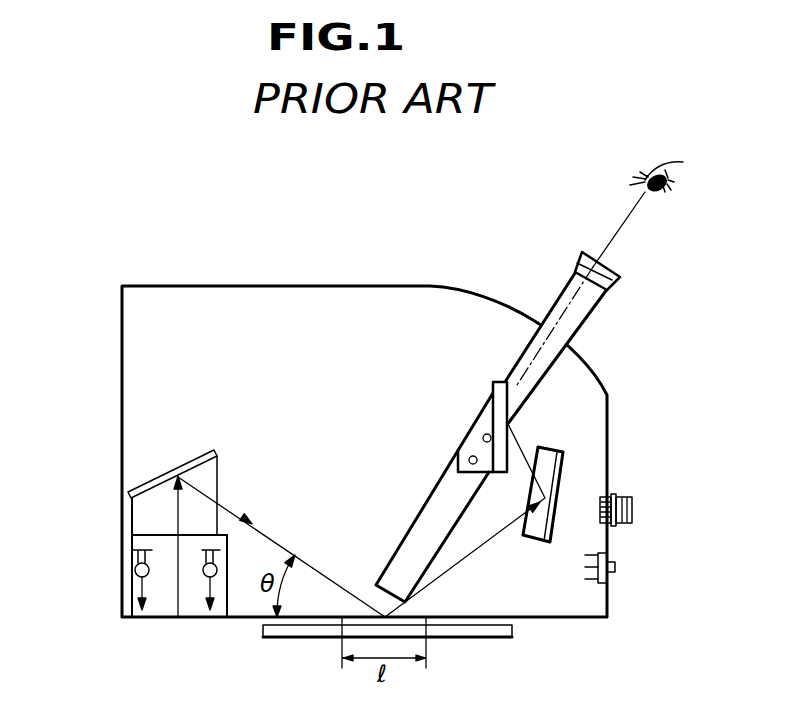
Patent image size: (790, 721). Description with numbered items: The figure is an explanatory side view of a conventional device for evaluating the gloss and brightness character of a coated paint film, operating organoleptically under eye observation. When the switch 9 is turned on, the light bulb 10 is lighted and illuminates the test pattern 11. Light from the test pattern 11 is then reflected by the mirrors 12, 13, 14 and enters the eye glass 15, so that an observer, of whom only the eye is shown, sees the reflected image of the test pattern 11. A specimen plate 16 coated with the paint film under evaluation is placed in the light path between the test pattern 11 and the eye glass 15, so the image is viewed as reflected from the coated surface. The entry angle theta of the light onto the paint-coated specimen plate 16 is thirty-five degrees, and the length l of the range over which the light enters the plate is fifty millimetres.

The switch 9 is at (615, 567).
The light bulb 10 is at (135, 568).
The test pattern 11 is at (152, 617).
The mirror 12 is at (207, 450).
The mirror 13 is at (565, 460).
The mirror 14 is at (499, 380).
The eye glass 15 is at (594, 255).
The specimen plate 16 is at (500, 640).